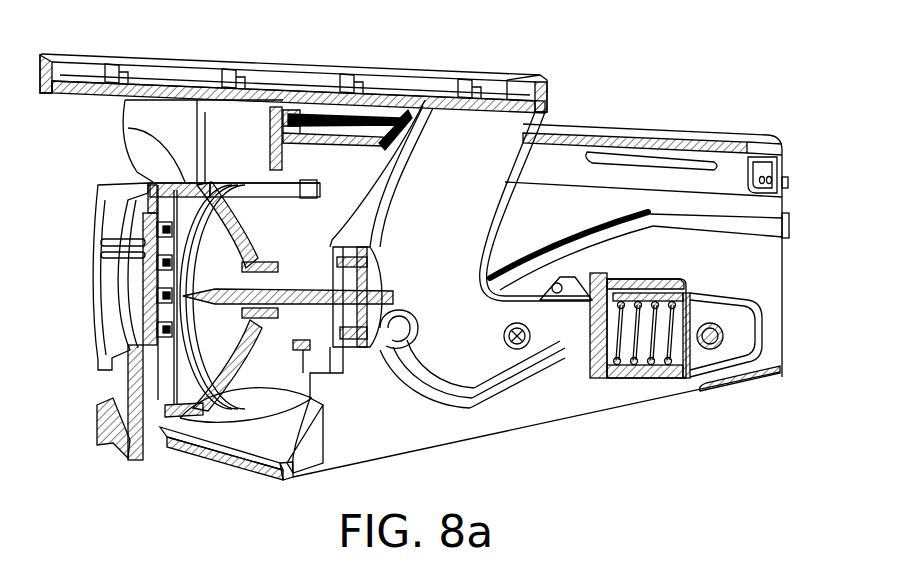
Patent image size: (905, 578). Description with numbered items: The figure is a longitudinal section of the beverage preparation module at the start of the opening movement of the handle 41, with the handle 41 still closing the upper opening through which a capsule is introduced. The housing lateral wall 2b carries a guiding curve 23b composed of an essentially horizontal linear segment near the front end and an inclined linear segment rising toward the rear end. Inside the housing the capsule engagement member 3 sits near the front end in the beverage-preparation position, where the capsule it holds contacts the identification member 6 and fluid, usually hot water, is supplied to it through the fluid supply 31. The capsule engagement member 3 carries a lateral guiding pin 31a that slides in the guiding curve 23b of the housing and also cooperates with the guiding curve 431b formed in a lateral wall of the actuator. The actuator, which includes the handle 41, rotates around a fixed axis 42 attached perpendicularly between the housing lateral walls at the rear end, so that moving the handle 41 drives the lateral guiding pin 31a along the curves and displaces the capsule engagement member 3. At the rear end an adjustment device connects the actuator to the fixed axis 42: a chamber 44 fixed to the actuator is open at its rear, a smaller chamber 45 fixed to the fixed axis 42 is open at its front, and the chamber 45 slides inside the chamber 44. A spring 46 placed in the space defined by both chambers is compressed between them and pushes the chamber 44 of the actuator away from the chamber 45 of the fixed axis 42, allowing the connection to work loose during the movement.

The capsule engagement member 3 is at (245, 252).
The handle 41 is at (258, 70).
The fluid supply 31 is at (423, 106).
The lateral guiding pin 31a is at (376, 365).
The guiding curve 431b is at (490, 405).
The identification member 6 is at (153, 232).
The guiding curve 23b is at (600, 234).
The chamber 44 is at (633, 280).
The chamber 45 is at (672, 292).
The spring 46 is at (643, 378).
The fixed axis 42 is at (717, 331).
The housing lateral wall 2b is at (786, 254).